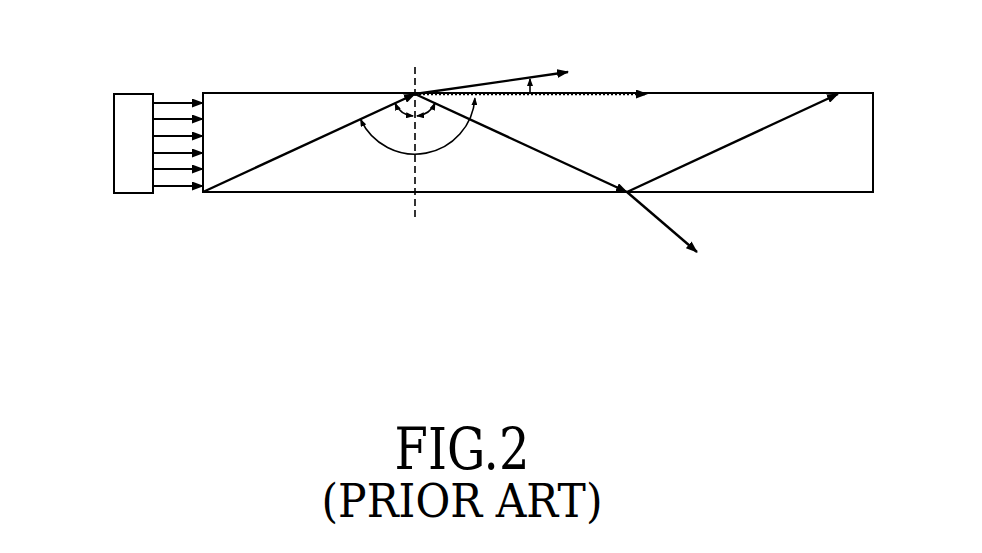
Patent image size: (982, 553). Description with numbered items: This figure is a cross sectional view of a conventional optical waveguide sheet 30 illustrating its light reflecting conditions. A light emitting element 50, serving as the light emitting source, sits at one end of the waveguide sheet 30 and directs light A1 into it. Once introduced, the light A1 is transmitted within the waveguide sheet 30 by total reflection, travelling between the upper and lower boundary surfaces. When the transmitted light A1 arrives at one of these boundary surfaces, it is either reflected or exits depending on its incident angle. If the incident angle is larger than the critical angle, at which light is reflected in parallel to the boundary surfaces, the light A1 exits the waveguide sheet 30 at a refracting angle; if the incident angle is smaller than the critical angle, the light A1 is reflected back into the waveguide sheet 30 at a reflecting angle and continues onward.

The optical waveguide sheet 30 is at (278, 178).
The light emitting element 50 is at (114, 143).
The light A1 is at (305, 143).